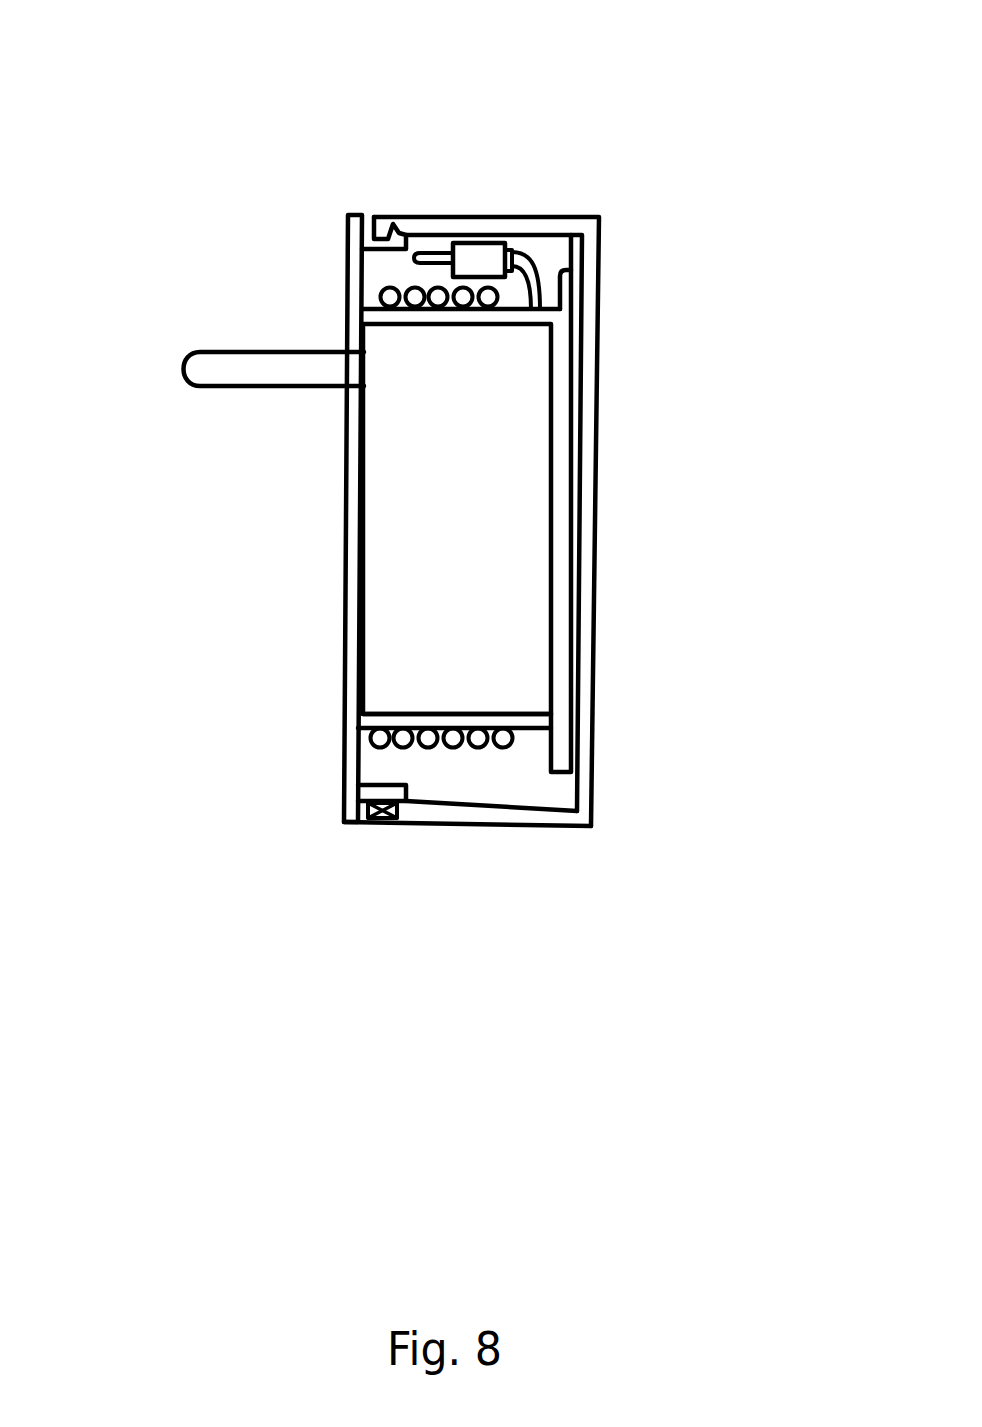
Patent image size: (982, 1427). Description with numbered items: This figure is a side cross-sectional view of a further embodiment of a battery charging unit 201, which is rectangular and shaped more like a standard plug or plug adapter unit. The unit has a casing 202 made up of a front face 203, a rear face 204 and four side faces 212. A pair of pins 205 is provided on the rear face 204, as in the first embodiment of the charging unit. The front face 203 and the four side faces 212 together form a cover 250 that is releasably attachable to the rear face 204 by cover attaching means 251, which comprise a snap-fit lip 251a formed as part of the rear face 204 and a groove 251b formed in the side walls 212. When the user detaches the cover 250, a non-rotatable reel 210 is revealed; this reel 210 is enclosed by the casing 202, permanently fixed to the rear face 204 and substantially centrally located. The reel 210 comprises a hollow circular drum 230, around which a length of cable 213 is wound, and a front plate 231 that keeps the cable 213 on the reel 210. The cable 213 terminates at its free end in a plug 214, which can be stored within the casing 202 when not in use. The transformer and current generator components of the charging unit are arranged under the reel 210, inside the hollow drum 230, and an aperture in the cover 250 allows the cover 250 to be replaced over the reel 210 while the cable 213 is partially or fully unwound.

The battery charging unit 201 is at (695, 207).
The casing 202 is at (560, 828).
The front face 203 is at (598, 447).
The rear face 204 is at (343, 518).
The pins 205 is at (243, 376).
The reel 210 is at (418, 714).
The side faces 212 is at (463, 216).
The cable 213 is at (383, 293).
The plug 214 is at (480, 257).
The hollow circular drum 230 is at (523, 714).
The front plate 231 is at (568, 302).
The cover 250 is at (590, 643).
The cover attaching means 251 is at (349, 900).
The snap-fit lip 251a is at (383, 818).
The groove 251b is at (396, 818).